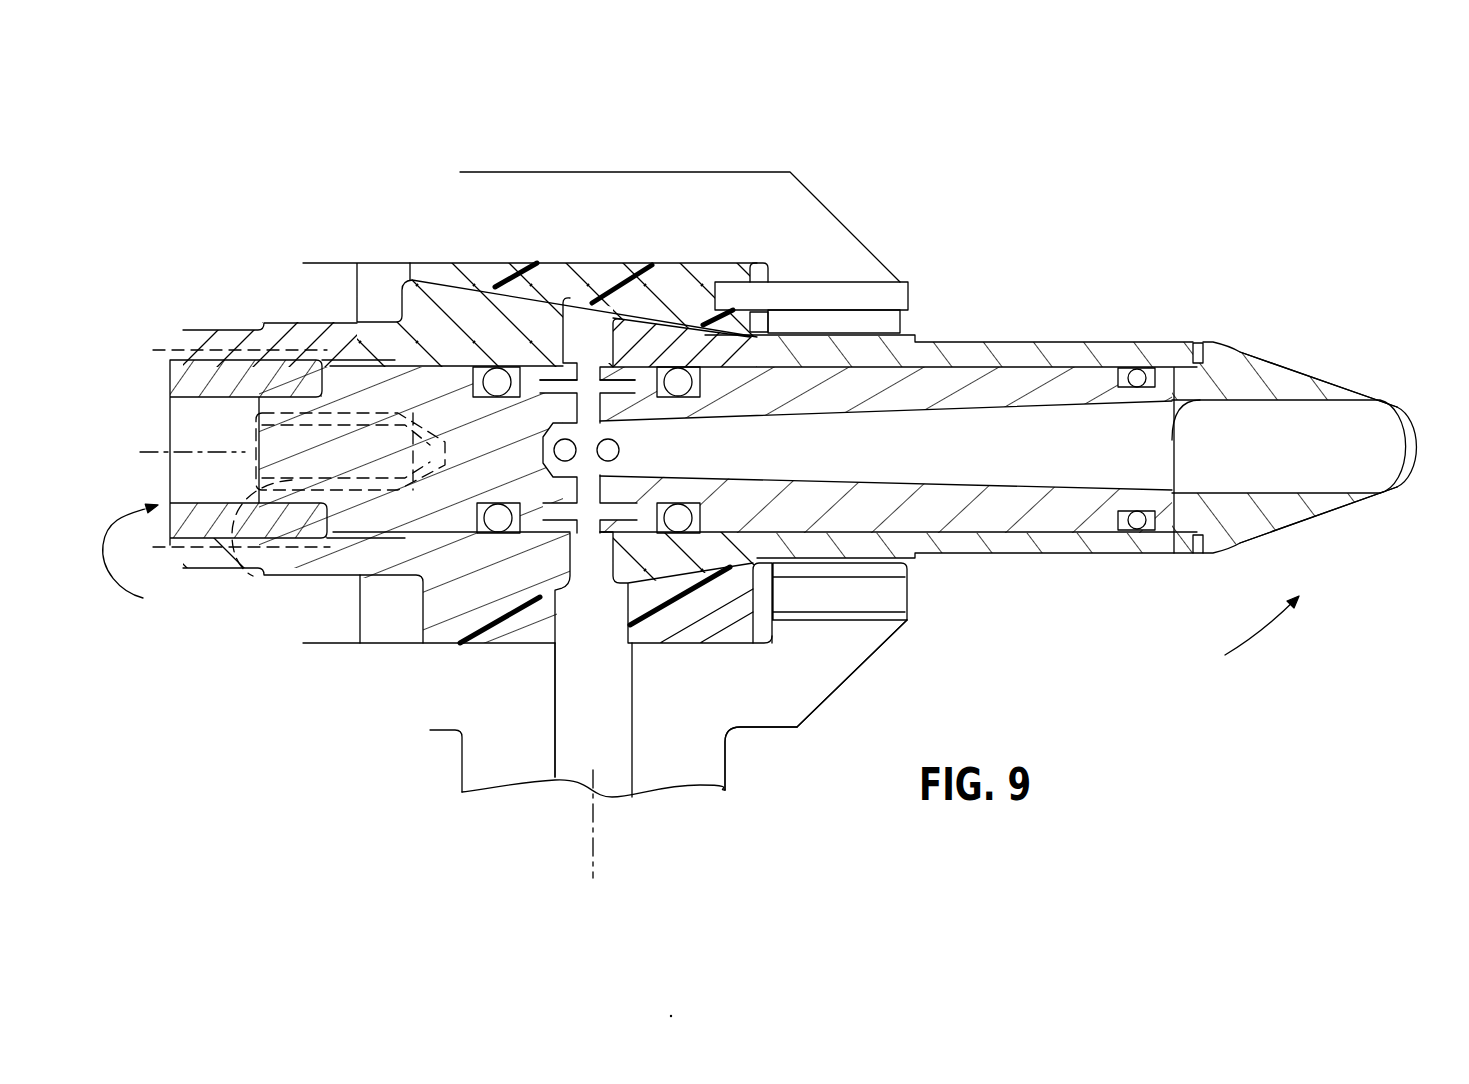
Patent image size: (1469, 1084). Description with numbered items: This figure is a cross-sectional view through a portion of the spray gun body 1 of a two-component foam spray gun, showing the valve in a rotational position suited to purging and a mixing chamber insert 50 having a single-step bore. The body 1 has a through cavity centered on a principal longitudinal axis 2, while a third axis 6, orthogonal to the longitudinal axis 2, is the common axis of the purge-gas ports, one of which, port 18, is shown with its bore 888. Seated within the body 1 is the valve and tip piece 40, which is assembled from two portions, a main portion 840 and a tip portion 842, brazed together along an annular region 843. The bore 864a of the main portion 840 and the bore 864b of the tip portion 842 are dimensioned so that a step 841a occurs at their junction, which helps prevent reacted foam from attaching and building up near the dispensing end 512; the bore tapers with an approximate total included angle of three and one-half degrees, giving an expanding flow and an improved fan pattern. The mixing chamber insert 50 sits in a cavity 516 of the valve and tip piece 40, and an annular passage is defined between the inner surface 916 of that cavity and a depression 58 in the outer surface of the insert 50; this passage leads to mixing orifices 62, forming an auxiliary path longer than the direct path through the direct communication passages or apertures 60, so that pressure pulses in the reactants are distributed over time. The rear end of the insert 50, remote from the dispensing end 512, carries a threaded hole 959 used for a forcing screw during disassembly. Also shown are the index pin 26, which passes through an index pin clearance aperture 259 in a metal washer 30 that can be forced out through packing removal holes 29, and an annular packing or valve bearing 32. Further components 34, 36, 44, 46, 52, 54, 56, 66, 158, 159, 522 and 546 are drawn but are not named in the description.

The spray gun body 1 is at (838, 678).
The principal or longitudinal axis 2 is at (145, 450).
The third axis 6 is at (598, 860).
The port 18 is at (461, 770).
The index pin 26 is at (912, 296).
The packing removal holes 29 is at (897, 597).
The metal washer 30 is at (710, 633).
The annular packing or valve bearing 32 is at (433, 280).
The body 34 is at (370, 279).
The insert 36 is at (323, 282).
The valve and tip piece 40 is at (417, 298).
The tip 44 is at (1405, 488).
The slot 46 is at (594, 318).
The mixing chamber insert 50 is at (1080, 388).
The O-ring 52 is at (1137, 372).
The seal 54 is at (675, 380).
The O-ring 56 is at (490, 372).
The depression 58 is at (560, 527).
The direct communication passages or apertures 60 is at (590, 400).
The mixing orifices 62 is at (630, 446).
The thread 66 is at (255, 377).
The shoulder 158 is at (627, 623).
The washer 159 is at (737, 278).
The index pin clearance aperture 259 is at (770, 283).
The dispensing end 512 is at (1235, 636).
The cavity 516 is at (148, 559).
The cavity 522 is at (417, 585).
The channel 546 is at (593, 570).
The main portion 840 is at (1172, 555).
The step 841a is at (1238, 405).
The tip portion 842 is at (1320, 384).
The annular region 843 is at (1200, 340).
The bore of main portion 864a is at (1044, 432).
The bore of tip portion 864b is at (1355, 442).
The bore of port 888 is at (578, 757).
The inner surface 916 is at (640, 380).
The threaded hole 959 is at (247, 570).